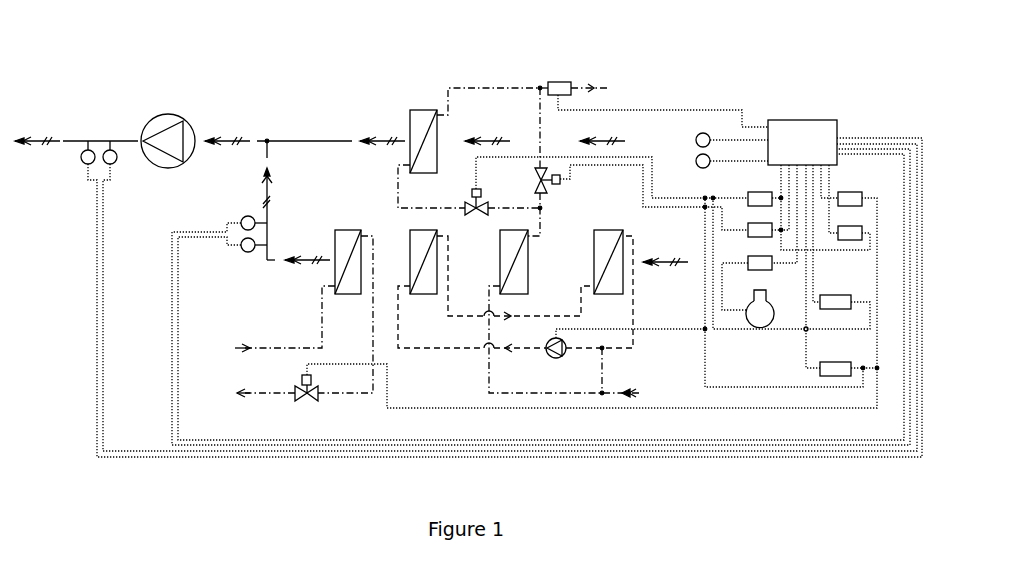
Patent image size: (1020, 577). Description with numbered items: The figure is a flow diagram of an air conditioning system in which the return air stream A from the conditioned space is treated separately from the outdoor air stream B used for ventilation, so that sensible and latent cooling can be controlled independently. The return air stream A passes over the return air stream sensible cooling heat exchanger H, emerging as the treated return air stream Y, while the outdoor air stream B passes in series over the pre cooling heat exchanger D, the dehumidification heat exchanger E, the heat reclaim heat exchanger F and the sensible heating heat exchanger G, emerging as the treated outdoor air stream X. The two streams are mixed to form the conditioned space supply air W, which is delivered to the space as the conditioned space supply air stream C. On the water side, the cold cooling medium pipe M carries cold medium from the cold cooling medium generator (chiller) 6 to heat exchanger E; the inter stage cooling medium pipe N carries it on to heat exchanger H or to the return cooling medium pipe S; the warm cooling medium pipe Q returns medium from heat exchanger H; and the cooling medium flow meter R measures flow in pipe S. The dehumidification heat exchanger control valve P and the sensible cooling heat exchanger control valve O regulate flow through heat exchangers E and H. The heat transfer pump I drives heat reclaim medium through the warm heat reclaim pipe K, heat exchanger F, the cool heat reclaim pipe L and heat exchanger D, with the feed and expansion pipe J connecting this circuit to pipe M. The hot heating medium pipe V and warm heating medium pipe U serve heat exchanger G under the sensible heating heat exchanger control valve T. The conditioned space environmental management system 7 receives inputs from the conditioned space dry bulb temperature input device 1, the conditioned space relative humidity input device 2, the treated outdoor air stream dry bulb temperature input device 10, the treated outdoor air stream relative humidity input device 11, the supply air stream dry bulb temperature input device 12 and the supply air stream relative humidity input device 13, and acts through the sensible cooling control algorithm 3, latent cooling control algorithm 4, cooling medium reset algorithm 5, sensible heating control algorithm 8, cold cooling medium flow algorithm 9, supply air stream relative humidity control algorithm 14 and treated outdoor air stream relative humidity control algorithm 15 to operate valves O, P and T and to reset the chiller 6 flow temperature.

The conditioned space dry bulb temperature input device 1 is at (724, 140).
The conditioned space relative humidity input device 2 is at (724, 161).
The sensible cooling control algorithm 3 is at (760, 191).
The latent cooling control algorithm 4 is at (760, 222).
The cooling medium reset algorithm 5 is at (747, 275).
The cold cooling medium generator (chiller) 6 is at (760, 302).
The conditioned space environmental management system 7 is at (697, 130).
The sensible heating control algorithm 8 is at (850, 191).
The cold cooling medium flow algorithm 9 is at (850, 224).
The treated outdoor air stream dry bulb temperature input device 10 is at (541, 297).
The treated outdoor air stream relative humidity input device 11 is at (541, 297).
The conditioned space supply air stream dry bulb temperature input device 12 is at (493, 297).
The conditioned space supply air stream relative humidity input device 13 is at (510, 296).
The conditioned space supply air stream relative humidity control algorithm 14 is at (791, 263).
The treated outdoor air stream relative humidity control algorithm 15 is at (792, 292).
The return air stream A is at (487, 130).
The outdoor air stream B is at (665, 249).
The conditioned space supply air stream C is at (227, 132).
The outdoor air stream pre cooling heat exchanger D is at (608, 255).
The outdoor air stream dehumidification heat exchanger E is at (514, 255).
The outdoor air stream heat reclaim heat exchanger F is at (423, 255).
The outdoor air stream sensible heating heat exchanger G is at (348, 255).
The return air stream sensible cooling heat exchanger H is at (423, 133).
The heat transfer pump I is at (623, 341).
The feed and expansion pipe J is at (607, 371).
The warm heat reclaim pipe K is at (515, 294).
The cool heat reclaim pipe L is at (515, 278).
The cold cooling medium pipe M is at (564, 341).
The inter stage cooling medium pipe N is at (542, 214).
The sensible cooling heat exchanger control valve O is at (604, 186).
The dehumidification heat exchanger control valve P is at (641, 197).
The warm cooling medium pipe Q is at (488, 92).
The cooling medium flow meter R is at (555, 78).
The return cooling medium pipe S is at (590, 80).
The outdoor air stream sensible heating heat exchanger control valve T is at (583, 303).
The warm heating medium pipe U is at (266, 387).
The hot heating medium pipe V is at (285, 319).
The conditioned space supply air W is at (37, 132).
The treated outdoor air stream X is at (307, 250).
The treated return air stream Y is at (304, 191).